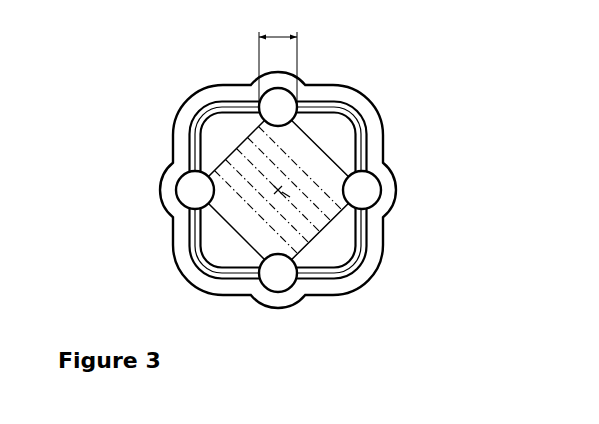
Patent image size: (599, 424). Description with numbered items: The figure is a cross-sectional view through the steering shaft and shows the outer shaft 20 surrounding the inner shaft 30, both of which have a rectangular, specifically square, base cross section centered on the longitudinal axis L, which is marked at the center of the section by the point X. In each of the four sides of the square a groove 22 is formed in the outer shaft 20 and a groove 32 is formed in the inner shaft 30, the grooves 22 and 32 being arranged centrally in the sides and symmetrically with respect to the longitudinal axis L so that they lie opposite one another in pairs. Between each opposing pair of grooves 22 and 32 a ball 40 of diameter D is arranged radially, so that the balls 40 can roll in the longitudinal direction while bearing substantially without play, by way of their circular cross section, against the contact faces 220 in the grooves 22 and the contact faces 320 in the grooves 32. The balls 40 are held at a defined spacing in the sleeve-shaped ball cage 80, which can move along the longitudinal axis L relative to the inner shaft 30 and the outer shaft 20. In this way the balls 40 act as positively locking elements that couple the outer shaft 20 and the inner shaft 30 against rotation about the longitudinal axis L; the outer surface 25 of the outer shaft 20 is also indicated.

The outer shaft 20 is at (375, 142).
The groove 22 is at (366, 192).
The outer surface of housing 25 is at (374, 111).
The inner shaft 30 is at (382, 247).
The groove 32 is at (262, 104).
The ball 40 is at (272, 112).
The ball cage 80 is at (370, 150).
The contact face 220 is at (176, 171).
The contact face 320 is at (238, 168).
The diameter D is at (283, 33).
The longitudinal axis L is at (376, 259).
The central axis X is at (282, 191).